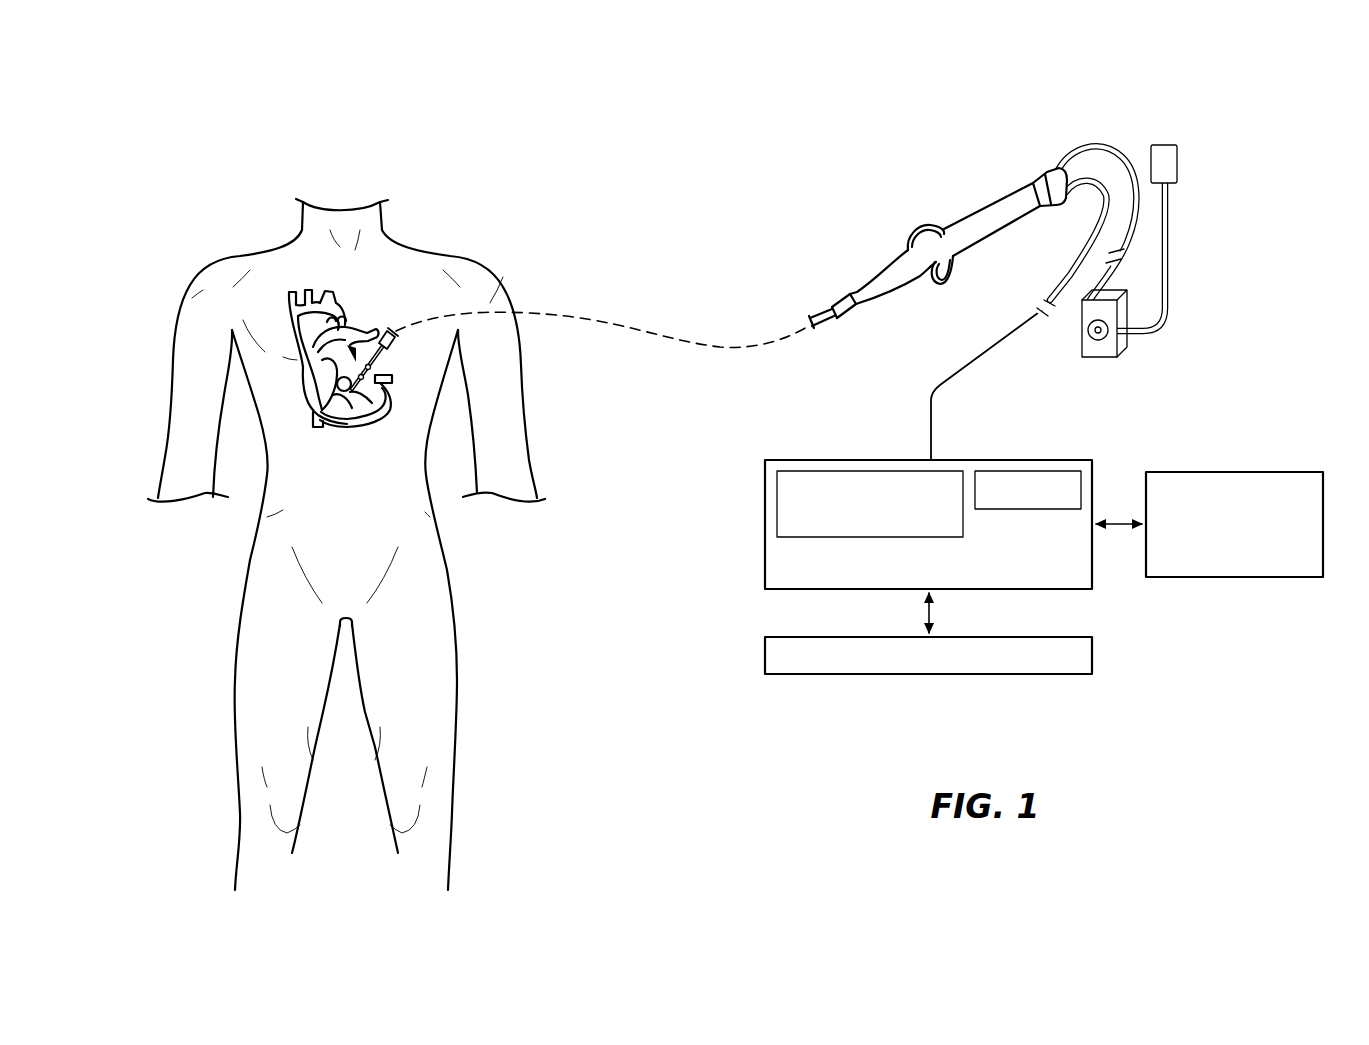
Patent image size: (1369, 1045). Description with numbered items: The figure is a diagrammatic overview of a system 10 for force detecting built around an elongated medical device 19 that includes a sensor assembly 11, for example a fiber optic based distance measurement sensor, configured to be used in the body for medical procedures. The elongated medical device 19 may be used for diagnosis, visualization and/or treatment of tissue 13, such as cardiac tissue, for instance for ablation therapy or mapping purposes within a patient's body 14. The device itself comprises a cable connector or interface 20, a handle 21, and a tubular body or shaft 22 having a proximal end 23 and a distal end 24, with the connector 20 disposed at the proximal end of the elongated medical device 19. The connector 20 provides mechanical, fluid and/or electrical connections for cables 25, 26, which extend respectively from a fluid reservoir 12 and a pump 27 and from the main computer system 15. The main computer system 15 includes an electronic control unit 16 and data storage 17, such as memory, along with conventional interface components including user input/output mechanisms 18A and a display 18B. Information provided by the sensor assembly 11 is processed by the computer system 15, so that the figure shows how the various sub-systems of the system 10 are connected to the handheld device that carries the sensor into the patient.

The system 10 is at (715, 173).
The sensor assembly 11 is at (344, 320).
The fluid reservoir 12 is at (1182, 158).
The tissue 13 is at (393, 407).
The patient's body 14 is at (255, 675).
The main computer system 15 is at (886, 495).
The electronic control unit 16 is at (886, 471).
The data storage 17 is at (1036, 471).
The user input/output mechanisms 18A is at (1092, 657).
The display 18B is at (1235, 472).
The elongated medical device 19 is at (936, 248).
The cable connector 20 is at (1045, 178).
The handle 21 is at (1002, 208).
The tubular body 22 is at (825, 322).
The proximal end 23 is at (832, 294).
The distal end 24 is at (344, 320).
The cable 25 is at (1098, 150).
The cable 26 is at (1093, 193).
The pump 27 is at (1138, 344).